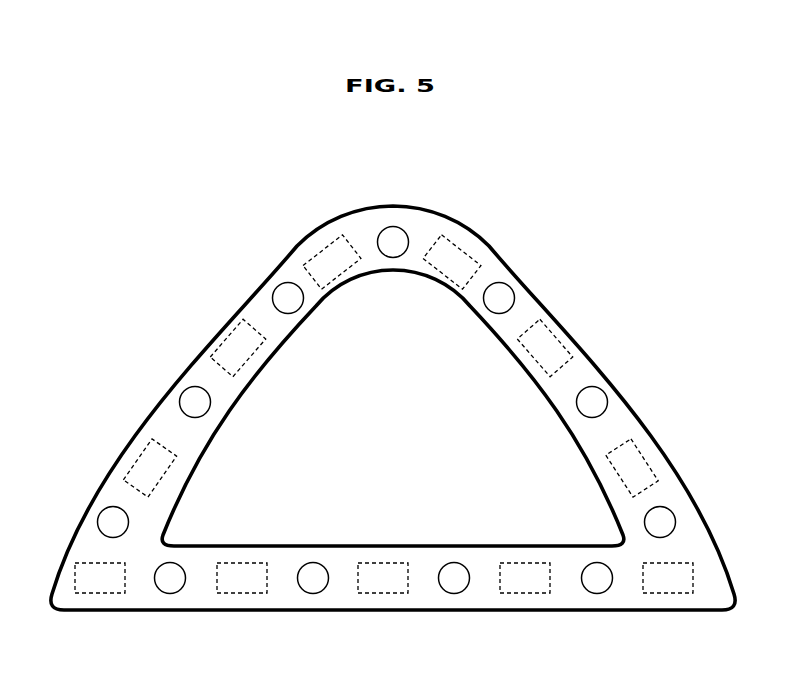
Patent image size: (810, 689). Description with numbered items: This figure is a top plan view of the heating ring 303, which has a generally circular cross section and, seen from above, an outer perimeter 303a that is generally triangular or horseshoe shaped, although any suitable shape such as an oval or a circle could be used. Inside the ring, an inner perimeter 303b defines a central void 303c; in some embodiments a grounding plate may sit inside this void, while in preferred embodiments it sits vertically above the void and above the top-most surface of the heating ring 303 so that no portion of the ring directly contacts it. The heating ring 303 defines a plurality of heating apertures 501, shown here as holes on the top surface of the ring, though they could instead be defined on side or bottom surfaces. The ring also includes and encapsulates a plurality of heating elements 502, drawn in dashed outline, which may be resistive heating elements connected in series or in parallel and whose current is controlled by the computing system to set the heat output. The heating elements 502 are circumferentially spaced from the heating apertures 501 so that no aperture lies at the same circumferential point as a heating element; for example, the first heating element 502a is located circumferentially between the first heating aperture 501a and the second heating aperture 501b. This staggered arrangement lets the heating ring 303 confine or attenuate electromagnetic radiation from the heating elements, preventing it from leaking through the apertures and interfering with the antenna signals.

The heating ring 303 is at (395, 433).
The outer perimeter 303a is at (502, 260).
The inner perimeter 303b is at (310, 318).
The central void 303c is at (414, 437).
The heating apertures 501 is at (111, 519).
The first heating aperture 501a is at (90, 654).
The second heating aperture 501b is at (454, 580).
The heating elements 502 is at (680, 580).
The first heating element 502a is at (392, 580).